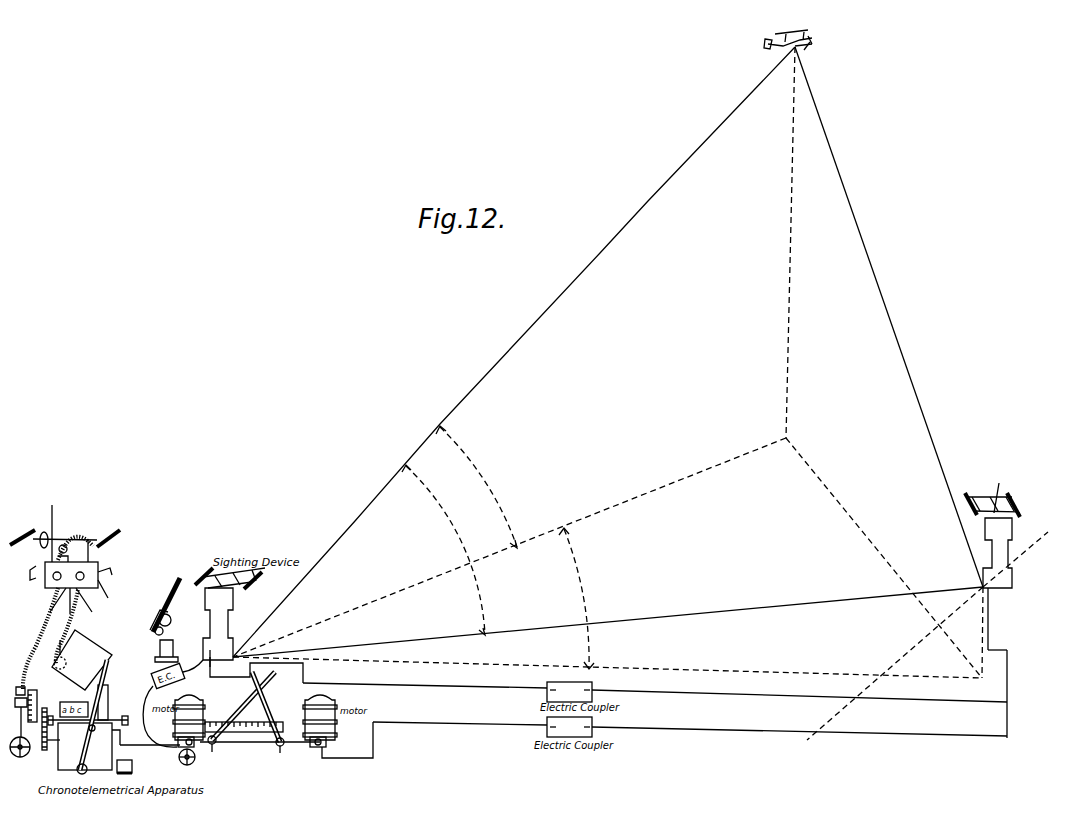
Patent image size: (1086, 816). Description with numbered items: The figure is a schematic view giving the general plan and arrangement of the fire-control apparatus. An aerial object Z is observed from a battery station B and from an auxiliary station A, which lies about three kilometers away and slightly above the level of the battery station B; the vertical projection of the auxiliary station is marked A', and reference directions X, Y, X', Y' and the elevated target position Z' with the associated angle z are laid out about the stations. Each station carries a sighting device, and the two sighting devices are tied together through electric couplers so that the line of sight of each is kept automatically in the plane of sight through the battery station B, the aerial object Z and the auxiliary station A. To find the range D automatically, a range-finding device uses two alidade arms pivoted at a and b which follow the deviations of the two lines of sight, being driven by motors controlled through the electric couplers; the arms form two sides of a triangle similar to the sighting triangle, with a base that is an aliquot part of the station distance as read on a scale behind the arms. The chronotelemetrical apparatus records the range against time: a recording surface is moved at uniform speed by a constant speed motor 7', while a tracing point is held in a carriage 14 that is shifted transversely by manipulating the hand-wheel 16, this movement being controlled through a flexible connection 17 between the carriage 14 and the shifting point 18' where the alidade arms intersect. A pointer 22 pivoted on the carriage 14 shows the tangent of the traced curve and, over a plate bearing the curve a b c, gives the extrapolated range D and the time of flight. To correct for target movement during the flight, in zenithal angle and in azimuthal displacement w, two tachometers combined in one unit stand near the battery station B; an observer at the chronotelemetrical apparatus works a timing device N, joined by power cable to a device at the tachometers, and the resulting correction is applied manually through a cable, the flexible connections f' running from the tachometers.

The carriage 14 is at (89, 729).
The hand-wheel 16 is at (190, 765).
The flexible connection 17 is at (128, 737).
The shifting point 18' is at (260, 717).
The pointer 22 is at (88, 758).
The constant speed motor 7' is at (137, 767).
The auxiliary station A is at (964, 577).
The projection of A A' is at (987, 685).
The battery station B is at (256, 666).
The range D is at (514, 352).
The timing device N is at (19, 732).
The axis X is at (802, 745).
The gun X' is at (169, 620).
The axis Y is at (1054, 525).
The axis Y' is at (237, 543).
The aerial object Z is at (774, 455).
The target aircraft Z' is at (788, 46).
The angle z is at (443, 546).
The azimuthal displacement w is at (585, 598).
The pivot of alidade arm a is at (488, 621).
The pivot of alidade arm b is at (214, 766).
The element c is at (82, 660).
The flexible shaft f' is at (64, 595).